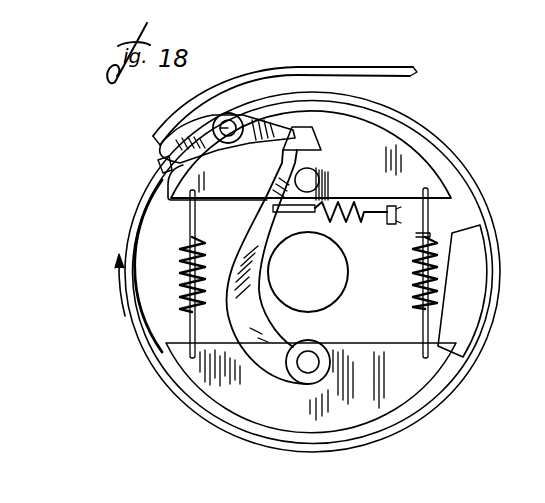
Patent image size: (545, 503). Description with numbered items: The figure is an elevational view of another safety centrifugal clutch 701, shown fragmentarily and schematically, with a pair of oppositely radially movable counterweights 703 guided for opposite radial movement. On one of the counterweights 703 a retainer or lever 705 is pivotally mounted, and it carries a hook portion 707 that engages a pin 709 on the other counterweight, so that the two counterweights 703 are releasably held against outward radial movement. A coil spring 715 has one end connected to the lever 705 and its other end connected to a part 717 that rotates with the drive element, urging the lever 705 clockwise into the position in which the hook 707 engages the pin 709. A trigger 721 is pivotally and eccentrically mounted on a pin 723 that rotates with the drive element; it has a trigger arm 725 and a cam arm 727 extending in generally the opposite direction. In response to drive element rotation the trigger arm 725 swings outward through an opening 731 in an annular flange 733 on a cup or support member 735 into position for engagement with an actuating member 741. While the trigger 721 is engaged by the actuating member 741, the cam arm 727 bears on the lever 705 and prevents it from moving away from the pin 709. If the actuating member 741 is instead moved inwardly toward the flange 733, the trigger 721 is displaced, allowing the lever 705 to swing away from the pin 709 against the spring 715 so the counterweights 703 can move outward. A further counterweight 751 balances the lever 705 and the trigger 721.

The safety clutch 701 is at (472, 107).
The counterweights 703 is at (413, 170).
The retainer or lever 705 is at (262, 350).
The hook portion 707 is at (318, 140).
The pin 709 is at (319, 180).
The coil spring 715 is at (358, 220).
The part 717 is at (397, 218).
The trigger 721 is at (252, 92).
The pin 723 is at (212, 127).
The trigger arm 725 is at (165, 150).
The cam arm 727 is at (217, 181).
The opening 731 is at (158, 166).
The annular flange 733 is at (142, 201).
The cup or support member 735 is at (183, 413).
The actuating member 741 is at (408, 56).
The counterweight 751 is at (462, 312).